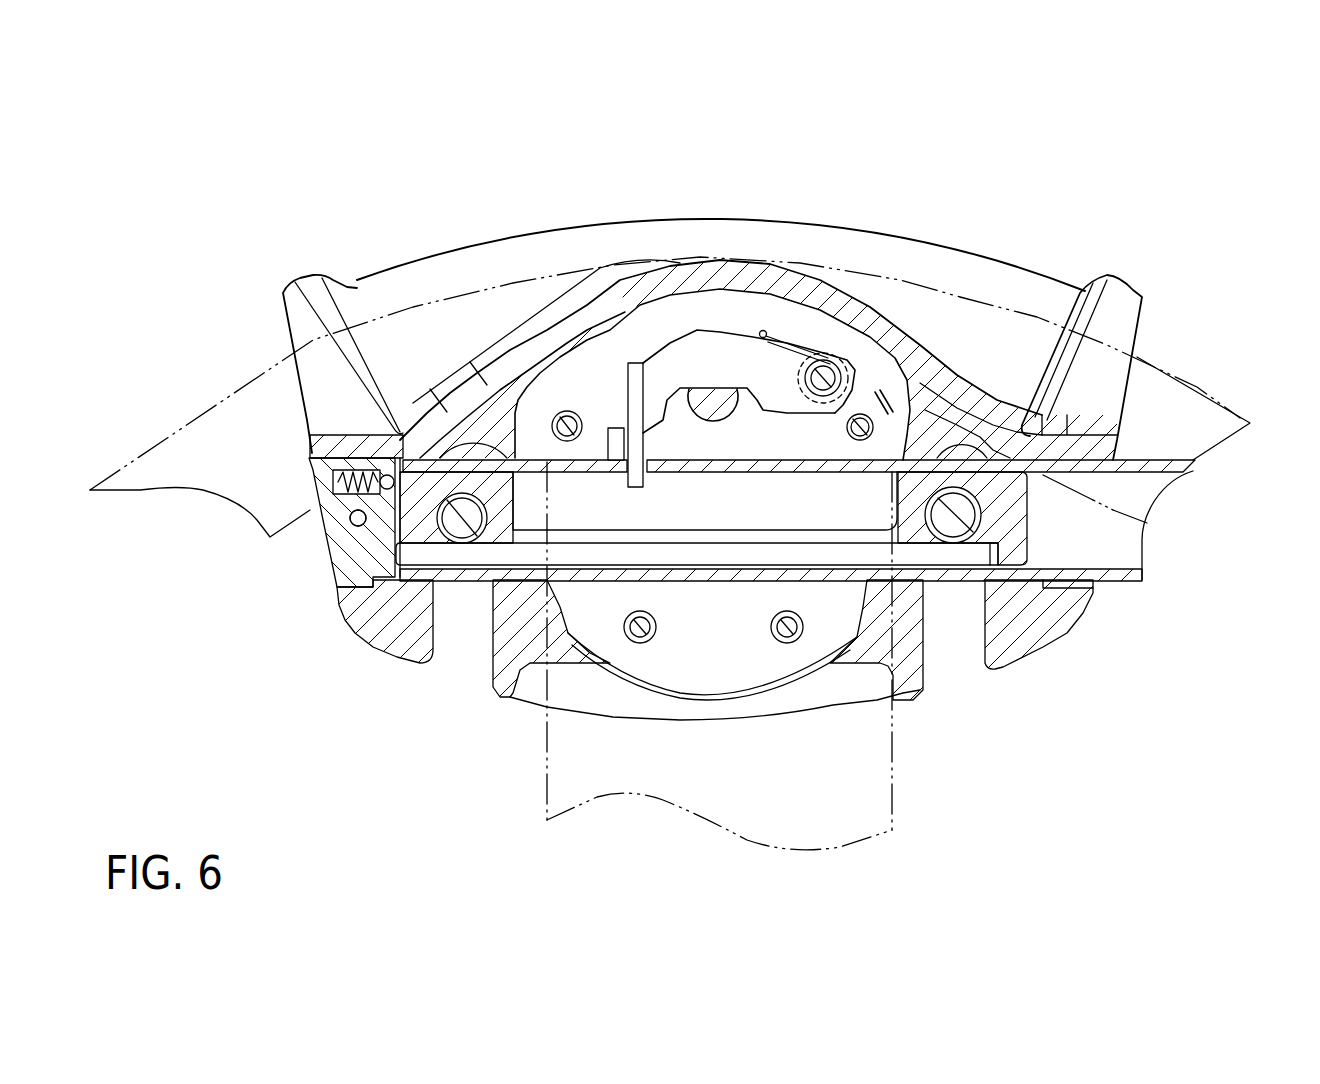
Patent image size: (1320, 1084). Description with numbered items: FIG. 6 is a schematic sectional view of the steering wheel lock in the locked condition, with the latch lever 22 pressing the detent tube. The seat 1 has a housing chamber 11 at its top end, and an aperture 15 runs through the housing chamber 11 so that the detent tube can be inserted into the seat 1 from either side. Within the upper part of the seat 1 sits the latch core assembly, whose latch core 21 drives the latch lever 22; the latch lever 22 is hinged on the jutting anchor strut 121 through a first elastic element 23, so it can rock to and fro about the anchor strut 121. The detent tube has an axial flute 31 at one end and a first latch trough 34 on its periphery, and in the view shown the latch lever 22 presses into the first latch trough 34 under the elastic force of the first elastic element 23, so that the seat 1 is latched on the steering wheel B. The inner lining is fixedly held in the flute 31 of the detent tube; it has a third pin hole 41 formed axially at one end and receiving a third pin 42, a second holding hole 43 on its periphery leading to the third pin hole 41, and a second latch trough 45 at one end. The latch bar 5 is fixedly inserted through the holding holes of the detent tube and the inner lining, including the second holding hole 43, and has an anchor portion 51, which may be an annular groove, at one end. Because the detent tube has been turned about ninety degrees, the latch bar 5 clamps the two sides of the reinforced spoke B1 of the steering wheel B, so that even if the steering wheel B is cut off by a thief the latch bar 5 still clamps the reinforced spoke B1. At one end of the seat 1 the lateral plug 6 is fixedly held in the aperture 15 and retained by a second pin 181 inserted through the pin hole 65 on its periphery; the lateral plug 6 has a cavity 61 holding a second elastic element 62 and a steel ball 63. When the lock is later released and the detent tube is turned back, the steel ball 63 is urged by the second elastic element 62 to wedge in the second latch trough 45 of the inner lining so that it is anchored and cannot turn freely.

The seat 1 is at (1030, 277).
The housing chamber 11 is at (760, 290).
The anchor strut 121 is at (825, 372).
The aperture 15 is at (1117, 343).
The latch core 21 is at (718, 390).
The latch lever 22 is at (687, 360).
The first elastic element 23 is at (883, 400).
The flute 31 is at (740, 507).
The first latch trough 34 is at (611, 472).
The third pin hole 41 is at (930, 573).
The third pin 42 is at (960, 545).
The second holding hole 43 is at (982, 507).
The second latch trough 45 is at (428, 443).
The latch bar 5 is at (453, 530).
The anchor portion 51 is at (480, 540).
The lateral plug 6 is at (347, 553).
The cavity 61 is at (361, 450).
The second elastic element 62 is at (323, 435).
The steel ball 63 is at (403, 435).
The pin hole 65 is at (351, 518).
The second pin 181 is at (362, 528).
The steering wheel B is at (240, 433).
The reinforced spoke B1 is at (863, 820).